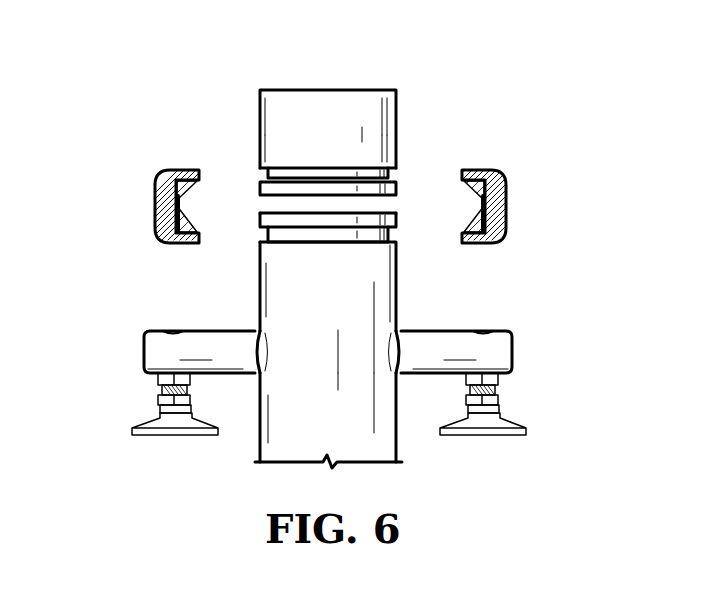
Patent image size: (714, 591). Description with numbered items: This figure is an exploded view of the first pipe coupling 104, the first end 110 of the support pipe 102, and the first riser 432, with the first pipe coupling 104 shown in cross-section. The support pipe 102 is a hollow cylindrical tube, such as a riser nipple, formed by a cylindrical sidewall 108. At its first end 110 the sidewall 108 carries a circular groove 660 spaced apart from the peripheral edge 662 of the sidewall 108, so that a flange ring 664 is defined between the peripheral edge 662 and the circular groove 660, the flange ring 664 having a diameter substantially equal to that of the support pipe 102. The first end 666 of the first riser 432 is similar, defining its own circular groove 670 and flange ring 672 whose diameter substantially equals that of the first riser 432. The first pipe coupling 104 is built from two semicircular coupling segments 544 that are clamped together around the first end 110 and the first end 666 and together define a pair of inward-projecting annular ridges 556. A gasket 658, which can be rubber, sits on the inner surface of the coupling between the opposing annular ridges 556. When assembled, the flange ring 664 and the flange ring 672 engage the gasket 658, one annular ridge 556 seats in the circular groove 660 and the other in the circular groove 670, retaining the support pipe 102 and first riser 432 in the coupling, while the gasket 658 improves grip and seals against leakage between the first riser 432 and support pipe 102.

The first riser 432 is at (287, 113).
The first end of the first riser 666 is at (310, 150).
The circular groove 670 is at (335, 175).
The flange ring 672 is at (368, 190).
The peripheral edge 662 is at (258, 205).
The flange ring 664 is at (397, 226).
The circular groove 660 is at (397, 238).
The first end 110 is at (397, 290).
The cylindrical sidewall 108 is at (287, 405).
The support pipe 102 is at (400, 447).
The semicircular coupling segment 544 is at (153, 210).
The first pipe coupling 104 is at (525, 204).
The annular ridge 556 is at (201, 172).
The gasket 658 is at (193, 220).